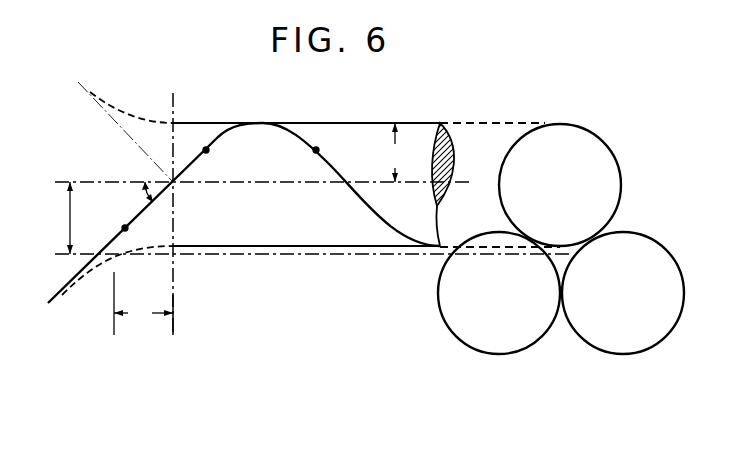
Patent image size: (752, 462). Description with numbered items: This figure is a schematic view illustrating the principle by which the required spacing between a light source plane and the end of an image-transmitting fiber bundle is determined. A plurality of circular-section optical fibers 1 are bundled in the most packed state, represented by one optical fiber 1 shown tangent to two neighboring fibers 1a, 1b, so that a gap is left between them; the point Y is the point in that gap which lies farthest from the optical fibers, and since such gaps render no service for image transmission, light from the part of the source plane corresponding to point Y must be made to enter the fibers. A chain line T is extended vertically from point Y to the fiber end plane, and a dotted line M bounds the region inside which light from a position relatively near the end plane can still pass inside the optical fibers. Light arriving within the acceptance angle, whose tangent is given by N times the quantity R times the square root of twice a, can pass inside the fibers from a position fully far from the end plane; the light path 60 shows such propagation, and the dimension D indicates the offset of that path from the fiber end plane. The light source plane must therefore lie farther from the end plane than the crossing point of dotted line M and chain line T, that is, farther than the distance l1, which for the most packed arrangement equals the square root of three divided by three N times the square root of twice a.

The magnetic tape path 60 is at (218, 140).
The optical fibers 1 is at (367, 144).
The lower guide roller 1a is at (505, 348).
The lower guide roller 1b is at (622, 348).
The point Y is at (563, 255).
The chain line T is at (304, 255).
The dotted line M is at (77, 282).
The offset distance D is at (66, 218).
The element R is at (393, 152).
The distance l1 is at (143, 303).